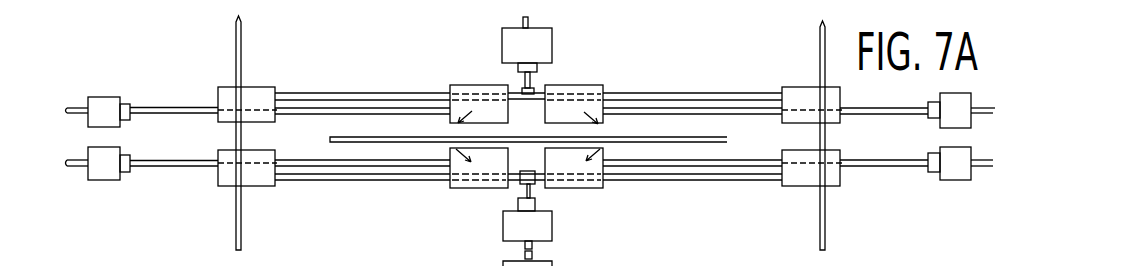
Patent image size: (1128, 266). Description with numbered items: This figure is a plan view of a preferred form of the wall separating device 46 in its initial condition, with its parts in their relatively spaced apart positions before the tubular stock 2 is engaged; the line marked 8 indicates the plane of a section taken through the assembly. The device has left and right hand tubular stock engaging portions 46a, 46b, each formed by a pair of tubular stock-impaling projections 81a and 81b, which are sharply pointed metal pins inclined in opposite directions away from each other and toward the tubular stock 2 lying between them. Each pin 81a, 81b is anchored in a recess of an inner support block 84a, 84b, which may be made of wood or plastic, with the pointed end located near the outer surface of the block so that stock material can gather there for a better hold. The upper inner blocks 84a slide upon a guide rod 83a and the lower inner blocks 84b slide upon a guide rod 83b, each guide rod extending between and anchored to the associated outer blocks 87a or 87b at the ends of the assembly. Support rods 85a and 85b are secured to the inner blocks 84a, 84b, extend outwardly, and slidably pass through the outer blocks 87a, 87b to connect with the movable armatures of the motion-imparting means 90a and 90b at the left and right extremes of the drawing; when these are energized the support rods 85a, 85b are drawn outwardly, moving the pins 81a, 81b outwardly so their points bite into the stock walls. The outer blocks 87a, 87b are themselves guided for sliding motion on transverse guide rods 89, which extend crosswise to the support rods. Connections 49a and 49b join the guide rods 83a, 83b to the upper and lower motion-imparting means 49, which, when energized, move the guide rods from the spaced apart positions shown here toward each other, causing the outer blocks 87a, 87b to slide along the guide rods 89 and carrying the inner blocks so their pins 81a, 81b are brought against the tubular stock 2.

The tubular stock 2 is at (728, 137).
The section line 8- 8 is at (433, 127).
The wall separating device 46 is at (493, 203).
The left hand tubular stock engaging portion 46a is at (517, 124).
The right hand tubular stock engaging portion 46b is at (458, 148).
The motion-imparting means 49 is at (552, 30).
The connection 49a is at (538, 69).
The connection 49b is at (537, 199).
The tubular stock-impaling projection 81a is at (520, 99).
The tubular stock-impaling projection 81b is at (517, 172).
The guide rod 83a is at (528, 95).
The guide rod 83b is at (528, 174).
The inner support block 84a is at (520, 80).
The inner support block 84b is at (517, 188).
The support rod 85a is at (528, 119).
The support rod 85b is at (338, 150).
The outer block 87a is at (250, 87).
The outer block 87b is at (252, 187).
The guide rod 89 is at (235, 230).
The motion-imparting means 90a is at (100, 97).
The motion-imparting means 90b is at (90, 182).